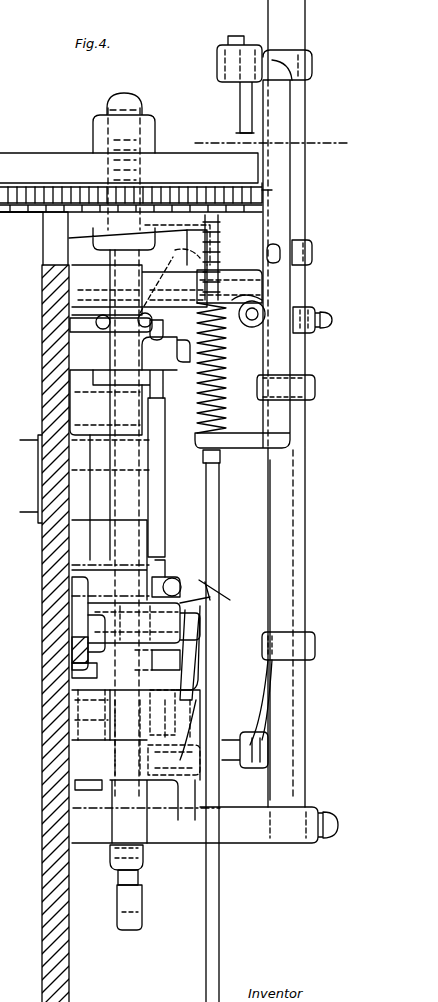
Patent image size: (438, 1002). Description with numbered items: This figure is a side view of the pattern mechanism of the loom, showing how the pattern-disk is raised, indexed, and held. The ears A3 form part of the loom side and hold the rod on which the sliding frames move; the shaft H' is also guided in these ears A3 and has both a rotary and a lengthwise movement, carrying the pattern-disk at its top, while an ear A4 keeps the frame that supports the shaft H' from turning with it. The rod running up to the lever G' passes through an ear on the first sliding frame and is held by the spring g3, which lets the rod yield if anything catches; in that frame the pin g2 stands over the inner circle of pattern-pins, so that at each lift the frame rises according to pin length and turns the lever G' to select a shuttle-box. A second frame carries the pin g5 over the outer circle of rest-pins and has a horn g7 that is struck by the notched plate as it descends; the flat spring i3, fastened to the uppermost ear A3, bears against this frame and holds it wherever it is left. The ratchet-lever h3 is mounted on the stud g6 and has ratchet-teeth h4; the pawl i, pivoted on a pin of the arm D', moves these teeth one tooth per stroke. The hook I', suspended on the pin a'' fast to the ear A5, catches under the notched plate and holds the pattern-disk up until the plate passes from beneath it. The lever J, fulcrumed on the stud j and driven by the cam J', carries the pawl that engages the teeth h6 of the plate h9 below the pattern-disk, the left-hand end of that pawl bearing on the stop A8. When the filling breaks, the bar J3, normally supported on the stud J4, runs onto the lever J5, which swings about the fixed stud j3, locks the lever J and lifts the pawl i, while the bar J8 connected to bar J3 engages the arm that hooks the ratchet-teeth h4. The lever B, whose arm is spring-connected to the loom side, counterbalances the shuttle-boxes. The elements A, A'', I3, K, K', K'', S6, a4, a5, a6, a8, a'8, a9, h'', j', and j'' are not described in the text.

The frame A is at (50, 607).
The frame lug A'' is at (26, 479).
The ear A3 is at (300, 314).
The ear A4 is at (180, 232).
The ear A5 is at (100, 580).
The stop A8 is at (139, 290).
The lever B is at (6, 841).
The arm D' is at (177, 735).
The lever G' is at (138, 857).
The shaft H' is at (113, 883).
The hook I' is at (206, 670).
The rod I3 is at (218, 460).
The lever J is at (138, 384).
The cam J' is at (170, 403).
The bar J3 is at (86, 642).
The stud J4 is at (80, 672).
The lever J5 is at (88, 632).
The bar J8 is at (95, 790).
The vertical rod K is at (295, 403).
The plunger K' is at (144, 460).
The rack bar K'' is at (131, 182).
The section line S6 is at (276, 134).
The pin a'' is at (197, 740).
The collar a4 is at (315, 252).
The bracket arm a5 is at (314, 66).
The housing a6 is at (110, 465).
The collar a8 is at (288, 646).
The link a'8 is at (294, 702).
The end block a9 is at (143, 922).
The pin g2 is at (235, 108).
The spring g3 is at (229, 351).
The pin g5 is at (240, 112).
The stud g6 is at (174, 760).
The horn g7 is at (183, 245).
The guide block h'' is at (245, 750).
The ratchet-lever h3 is at (163, 712).
The ratchet-teeth h4 is at (190, 625).
The teeth h6 is at (21, 223).
The plate h9 is at (276, 195).
The pawl i is at (200, 686).
The flat spring i3 is at (167, 314).
The stud j is at (166, 345).
The loop j' is at (273, 253).
The pin column j'' is at (238, 257).
The stud j3 is at (200, 607).